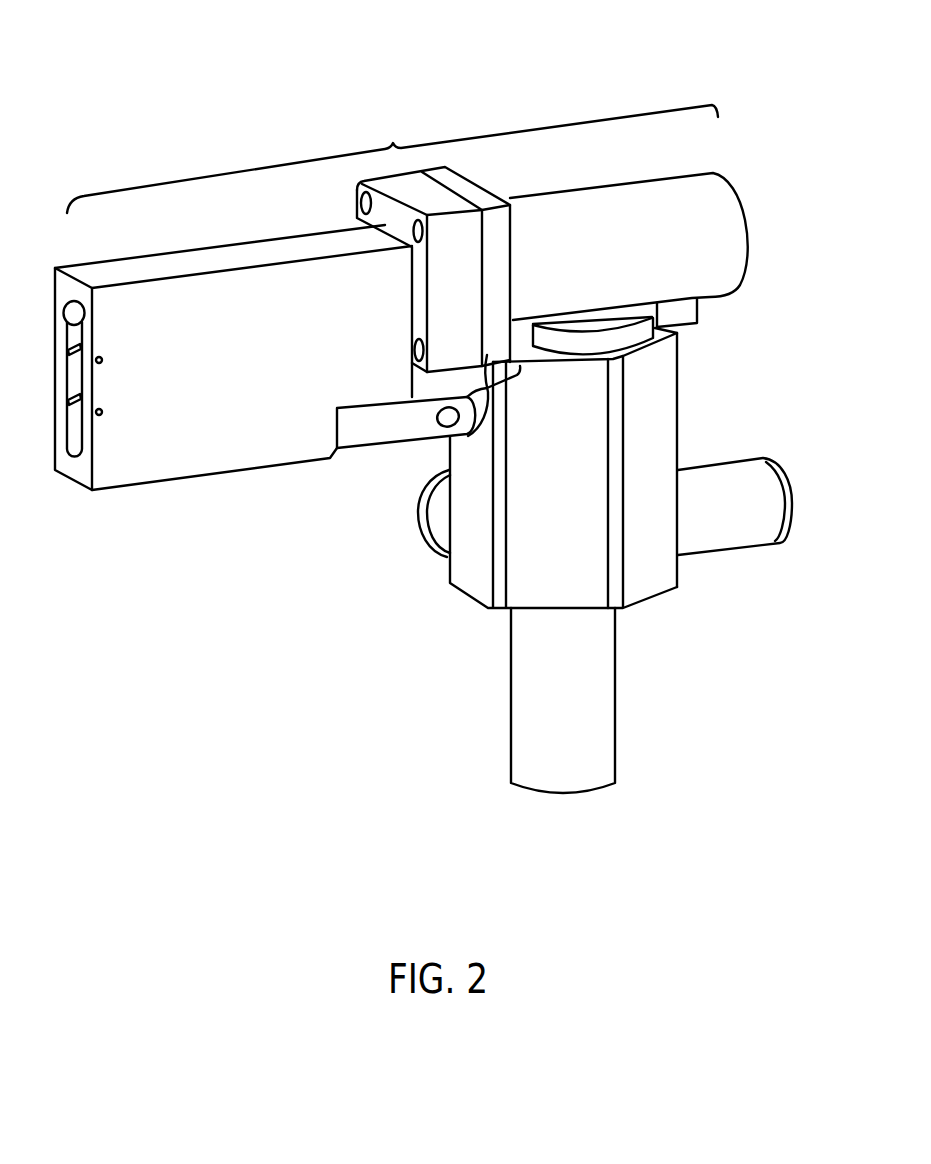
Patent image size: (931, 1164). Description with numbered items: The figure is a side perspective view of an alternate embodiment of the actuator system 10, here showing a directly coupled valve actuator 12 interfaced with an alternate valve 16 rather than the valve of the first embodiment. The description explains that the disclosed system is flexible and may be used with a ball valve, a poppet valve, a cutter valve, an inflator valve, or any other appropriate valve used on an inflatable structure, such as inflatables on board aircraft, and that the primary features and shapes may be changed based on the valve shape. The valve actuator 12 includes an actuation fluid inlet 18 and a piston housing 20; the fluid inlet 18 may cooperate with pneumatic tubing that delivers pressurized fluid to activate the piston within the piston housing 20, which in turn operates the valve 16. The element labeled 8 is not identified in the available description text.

The cylinder 8 is at (687, 260).
The actuator system 10 is at (439, 408).
The valve actuator 12 is at (392, 159).
The alternate valve 16 is at (583, 475).
The actuation fluid inlet 18 is at (240, 408).
The piston housing 20 is at (467, 434).